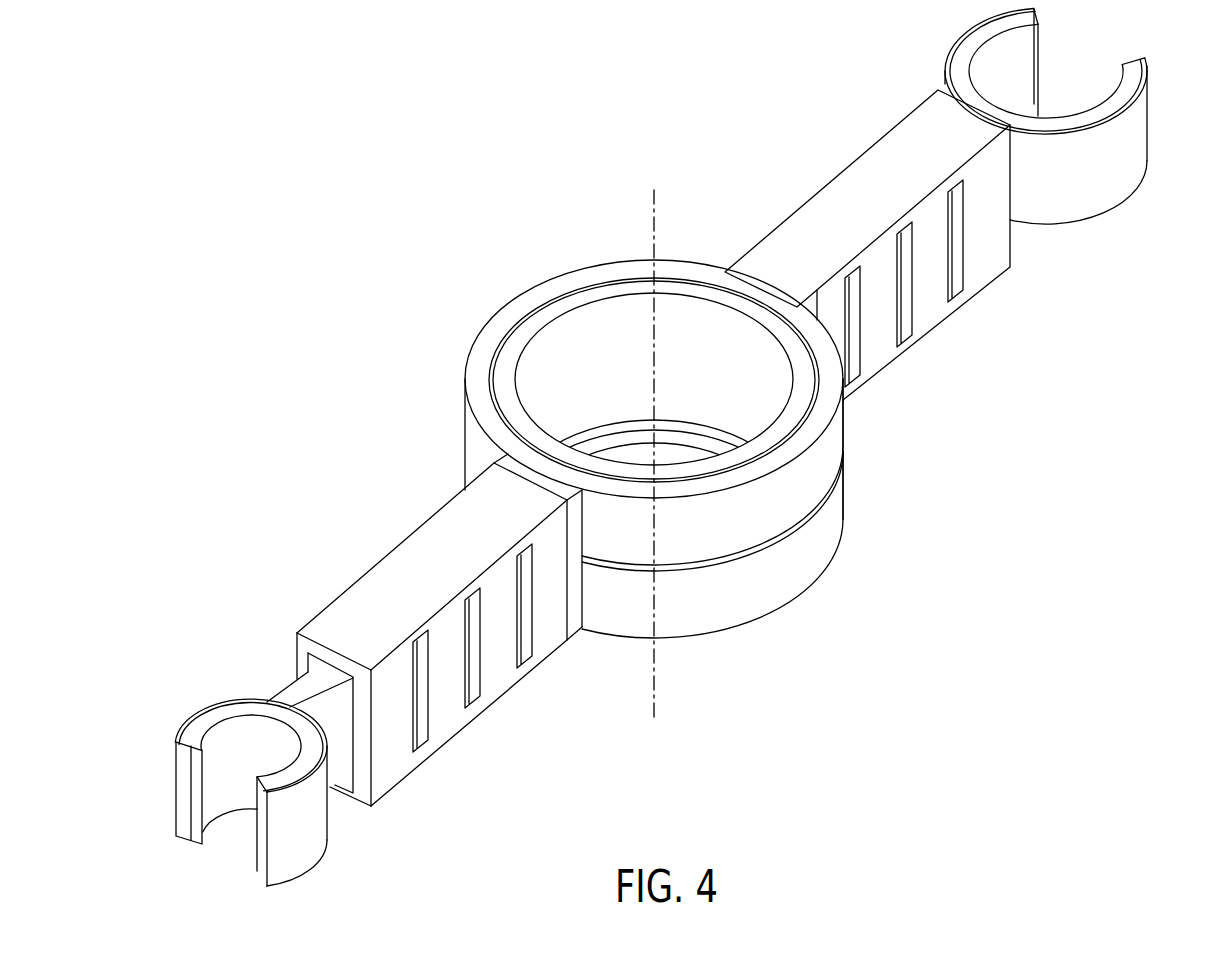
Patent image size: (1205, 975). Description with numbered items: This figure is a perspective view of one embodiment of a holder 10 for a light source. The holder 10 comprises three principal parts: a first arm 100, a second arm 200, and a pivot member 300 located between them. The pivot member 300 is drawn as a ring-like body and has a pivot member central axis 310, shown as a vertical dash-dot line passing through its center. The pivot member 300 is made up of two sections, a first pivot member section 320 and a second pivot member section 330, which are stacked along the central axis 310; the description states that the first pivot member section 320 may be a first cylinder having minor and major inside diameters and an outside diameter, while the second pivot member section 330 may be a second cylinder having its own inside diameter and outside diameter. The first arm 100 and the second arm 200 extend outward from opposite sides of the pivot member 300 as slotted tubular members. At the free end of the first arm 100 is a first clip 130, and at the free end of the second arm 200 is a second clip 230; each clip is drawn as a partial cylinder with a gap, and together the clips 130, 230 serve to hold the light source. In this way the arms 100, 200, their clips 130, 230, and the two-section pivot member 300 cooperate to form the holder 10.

The holder 10 is at (284, 178).
The first arm 100 is at (405, 574).
The first clip 130 is at (312, 826).
The second arm 200 is at (855, 191).
The second clip 230 is at (1130, 151).
The pivot member 300 is at (712, 262).
The pivot member central axis 310 is at (658, 673).
The first pivot member section 320 is at (847, 522).
The second pivot member section 330 is at (847, 455).